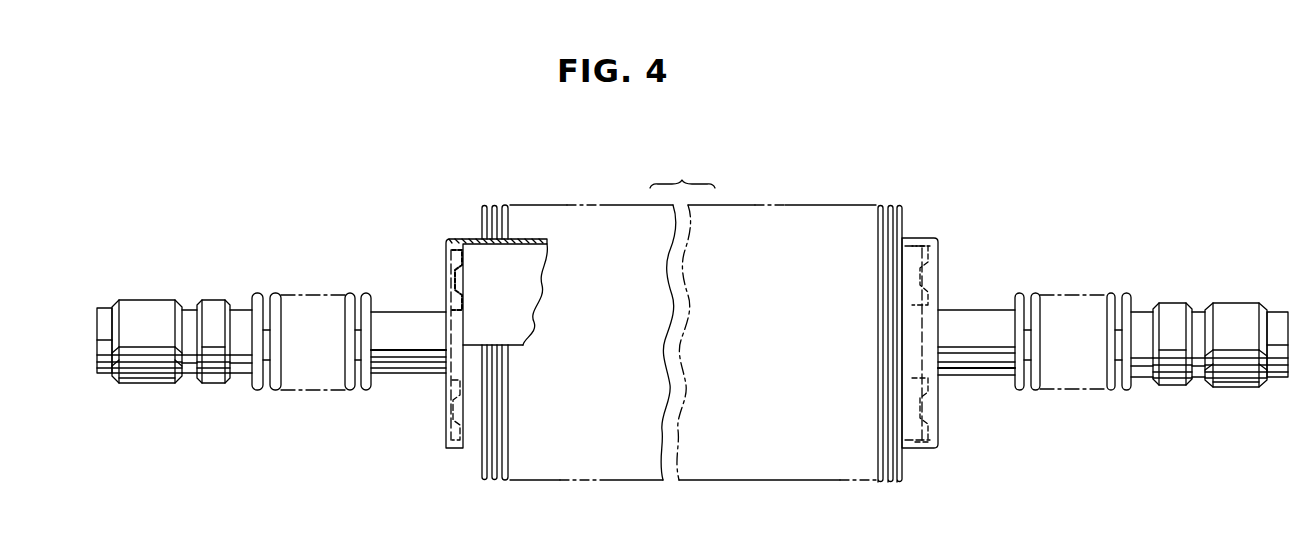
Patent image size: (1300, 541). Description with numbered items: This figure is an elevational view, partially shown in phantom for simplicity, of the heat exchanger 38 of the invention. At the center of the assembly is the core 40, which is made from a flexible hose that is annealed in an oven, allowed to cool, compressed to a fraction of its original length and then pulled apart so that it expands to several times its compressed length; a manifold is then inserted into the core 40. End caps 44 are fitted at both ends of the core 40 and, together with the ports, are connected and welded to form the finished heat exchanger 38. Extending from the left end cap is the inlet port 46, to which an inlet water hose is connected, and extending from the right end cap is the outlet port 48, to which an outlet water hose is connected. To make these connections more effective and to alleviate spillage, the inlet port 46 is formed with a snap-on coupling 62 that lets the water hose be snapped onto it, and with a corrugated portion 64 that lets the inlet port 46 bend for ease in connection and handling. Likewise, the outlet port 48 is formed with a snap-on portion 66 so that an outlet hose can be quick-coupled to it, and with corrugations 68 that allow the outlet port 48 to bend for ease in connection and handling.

The heat exchanger 38 is at (808, 198).
The core 40 is at (492, 222).
The end caps 44 is at (455, 257).
The inlet port 46 is at (103, 368).
The outlet port 48 is at (972, 322).
The snap-on coupling 62 is at (177, 370).
The corrugated portion 64 is at (300, 365).
The snap-on portion 66 is at (1170, 375).
The corrugations 68 is at (1050, 367).